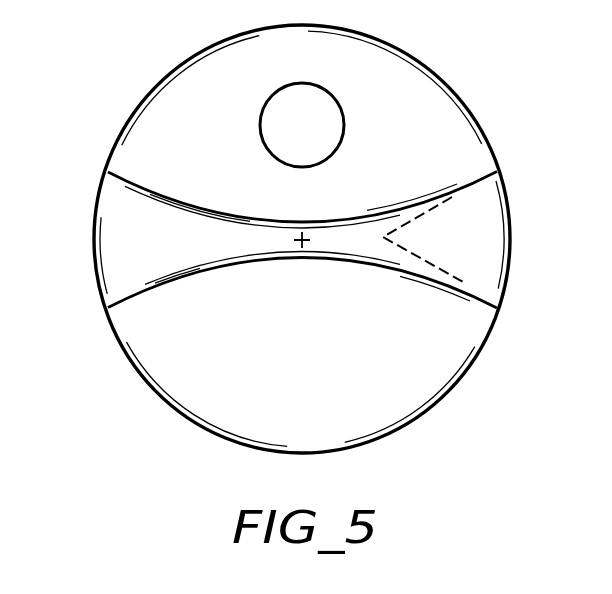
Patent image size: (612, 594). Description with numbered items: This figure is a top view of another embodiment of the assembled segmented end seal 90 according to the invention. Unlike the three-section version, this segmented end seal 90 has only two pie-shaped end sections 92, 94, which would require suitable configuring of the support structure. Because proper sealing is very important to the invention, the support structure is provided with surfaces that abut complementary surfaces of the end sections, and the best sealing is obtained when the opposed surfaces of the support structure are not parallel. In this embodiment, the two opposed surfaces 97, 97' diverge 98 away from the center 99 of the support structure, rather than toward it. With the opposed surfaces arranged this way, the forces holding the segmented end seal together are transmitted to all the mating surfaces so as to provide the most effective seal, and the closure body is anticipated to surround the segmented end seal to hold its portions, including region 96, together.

The segmented end seal 90 is at (78, 265).
The pie-shaped end section 92 is at (188, 113).
The pie-shaped end section 94 is at (208, 380).
The right side band region 96 is at (462, 236).
The opposed surface 97 is at (427, 125).
The opposed surface 97' is at (452, 357).
The divergence 98 is at (414, 256).
The center 99 is at (300, 242).